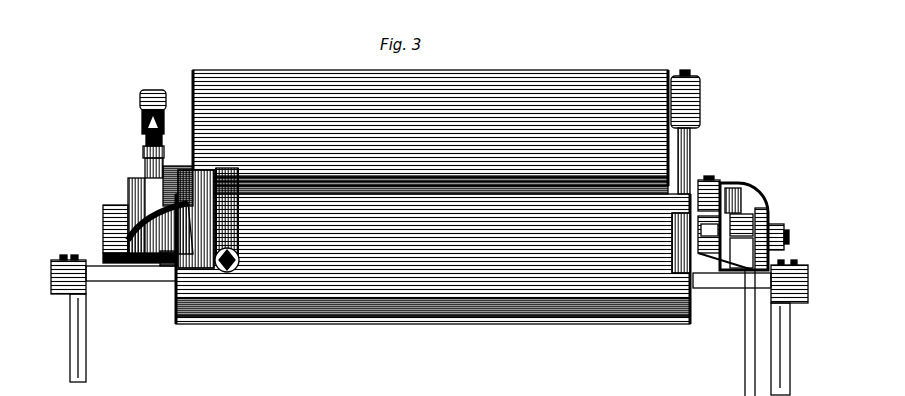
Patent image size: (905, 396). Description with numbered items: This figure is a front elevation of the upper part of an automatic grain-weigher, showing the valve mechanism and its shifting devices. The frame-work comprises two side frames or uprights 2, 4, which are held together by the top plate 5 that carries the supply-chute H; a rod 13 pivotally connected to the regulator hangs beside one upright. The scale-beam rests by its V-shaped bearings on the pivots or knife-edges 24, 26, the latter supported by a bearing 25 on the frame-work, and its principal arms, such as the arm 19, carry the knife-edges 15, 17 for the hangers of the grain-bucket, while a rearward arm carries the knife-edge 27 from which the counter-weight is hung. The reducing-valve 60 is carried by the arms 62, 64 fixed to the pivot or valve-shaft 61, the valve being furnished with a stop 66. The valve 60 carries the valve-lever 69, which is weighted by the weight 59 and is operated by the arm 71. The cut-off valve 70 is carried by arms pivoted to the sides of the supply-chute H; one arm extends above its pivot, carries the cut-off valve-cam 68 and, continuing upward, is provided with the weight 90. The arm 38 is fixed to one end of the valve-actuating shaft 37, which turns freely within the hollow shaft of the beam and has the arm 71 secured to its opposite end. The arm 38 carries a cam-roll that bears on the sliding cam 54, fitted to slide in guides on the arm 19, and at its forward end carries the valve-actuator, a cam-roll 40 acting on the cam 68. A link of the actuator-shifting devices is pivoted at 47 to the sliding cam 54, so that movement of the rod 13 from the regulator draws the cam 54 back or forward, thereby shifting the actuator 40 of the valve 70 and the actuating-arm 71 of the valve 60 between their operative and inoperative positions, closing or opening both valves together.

The supply-chute H is at (491, 82).
The valve-shaft 61 is at (418, 175).
The arm 62 is at (433, 259).
The reducing-valve 60 is at (424, 305).
The cut-off valve 70 is at (370, 312).
The pivot or knife-edge 26 is at (196, 219).
The arm 64 is at (231, 236).
The stop 66 is at (232, 253).
The weight 59 is at (147, 82).
The valve-lever 69 is at (137, 130).
The arm 71 is at (134, 145).
The valve-actuating shaft 37 is at (124, 180).
The knife-edge 17 is at (110, 197).
The pivot or knife-edge 24 is at (140, 218).
The bearing 25 is at (150, 262).
The top plate 5 is at (54, 258).
The side frame or upright 4 is at (72, 352).
The weight 90 is at (688, 80).
The arm 38 is at (702, 170).
The cut-off valve-cam 68 is at (709, 234).
The knife-edge 27 is at (686, 268).
The knife-edge 15 is at (738, 212).
The principal arm 19 is at (741, 253).
The cam-roll 40 is at (760, 206).
The pivot 47 is at (777, 228).
The sliding cam 54 is at (781, 236).
The rod 13 is at (737, 352).
The side frame or upright 2 is at (773, 328).